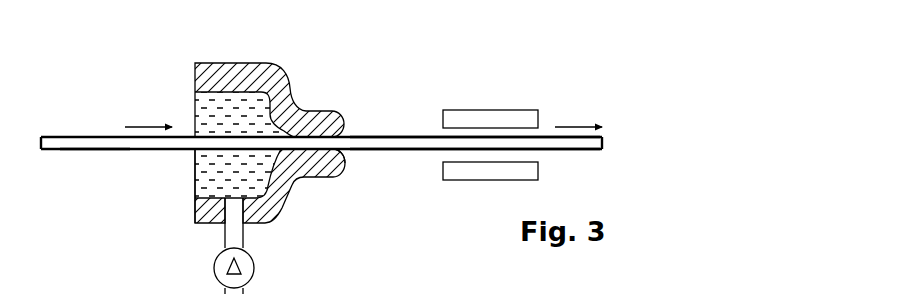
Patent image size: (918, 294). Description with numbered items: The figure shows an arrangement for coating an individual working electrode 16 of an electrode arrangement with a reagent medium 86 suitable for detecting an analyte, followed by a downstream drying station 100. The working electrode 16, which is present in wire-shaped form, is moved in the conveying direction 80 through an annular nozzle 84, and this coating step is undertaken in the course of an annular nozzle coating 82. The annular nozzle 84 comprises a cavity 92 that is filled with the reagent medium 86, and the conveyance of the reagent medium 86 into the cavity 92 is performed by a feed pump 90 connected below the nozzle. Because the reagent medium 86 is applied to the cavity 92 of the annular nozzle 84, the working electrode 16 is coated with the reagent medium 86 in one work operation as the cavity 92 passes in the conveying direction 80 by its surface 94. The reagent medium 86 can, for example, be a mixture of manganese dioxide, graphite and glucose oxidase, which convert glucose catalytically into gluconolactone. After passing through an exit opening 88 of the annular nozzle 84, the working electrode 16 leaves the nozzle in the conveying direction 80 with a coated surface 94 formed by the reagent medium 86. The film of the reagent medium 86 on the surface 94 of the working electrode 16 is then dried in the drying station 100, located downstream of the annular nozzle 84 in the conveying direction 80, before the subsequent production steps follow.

The working electrode 16 is at (73, 142).
The conveying direction 80 is at (144, 127).
The annular nozzle coating 82 is at (303, 85).
The annular nozzle 84 is at (280, 187).
The reagent medium 86 is at (211, 100).
The exit opening 88 is at (343, 153).
The feed pump 90 is at (254, 267).
The cavity 92 is at (192, 175).
The surface 94 is at (90, 150).
The drying station 100 is at (507, 108).